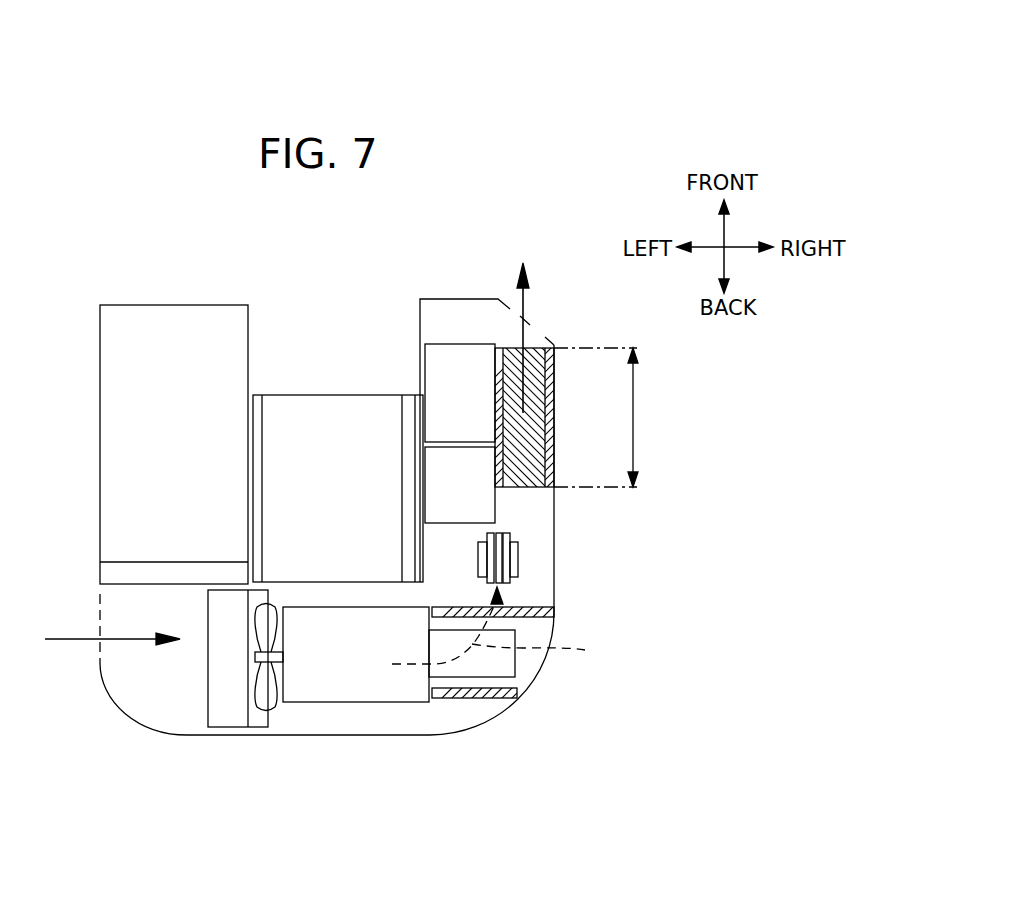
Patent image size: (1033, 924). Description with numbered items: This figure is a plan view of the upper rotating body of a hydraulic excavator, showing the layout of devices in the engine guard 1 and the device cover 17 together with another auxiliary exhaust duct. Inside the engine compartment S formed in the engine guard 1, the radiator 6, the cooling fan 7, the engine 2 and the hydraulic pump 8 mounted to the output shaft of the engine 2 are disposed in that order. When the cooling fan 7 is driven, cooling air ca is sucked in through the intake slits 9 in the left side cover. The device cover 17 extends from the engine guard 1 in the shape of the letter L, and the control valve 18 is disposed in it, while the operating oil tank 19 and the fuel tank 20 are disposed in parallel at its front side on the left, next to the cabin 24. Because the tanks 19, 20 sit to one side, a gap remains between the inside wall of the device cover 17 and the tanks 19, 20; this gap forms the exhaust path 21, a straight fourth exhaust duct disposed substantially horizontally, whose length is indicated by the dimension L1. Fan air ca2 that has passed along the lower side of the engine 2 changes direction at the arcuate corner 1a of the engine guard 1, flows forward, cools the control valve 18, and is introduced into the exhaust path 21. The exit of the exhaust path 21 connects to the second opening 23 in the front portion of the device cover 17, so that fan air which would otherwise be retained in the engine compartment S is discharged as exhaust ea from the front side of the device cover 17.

The engine guard 1 is at (367, 740).
The arcuate corner 1a is at (525, 693).
The engine 2 is at (392, 690).
The radiator 6 is at (228, 717).
The cooling fan 7 is at (278, 710).
The hydraulic pump 8 is at (507, 663).
The intake slits 9 is at (100, 665).
The device cover 17 is at (557, 512).
The control valve 18 is at (520, 552).
The operating oil tank 19 is at (442, 480).
The fuel tank 20 is at (442, 377).
The exhaust path 21 is at (552, 407).
The second opening 23 is at (538, 329).
The cabin 24 is at (174, 444).
The engine compartment S is at (323, 720).
The cooling air ca is at (63, 638).
The fan air ca2 is at (508, 627).
The exhaust ea is at (520, 295).
The length L1 is at (608, 417).